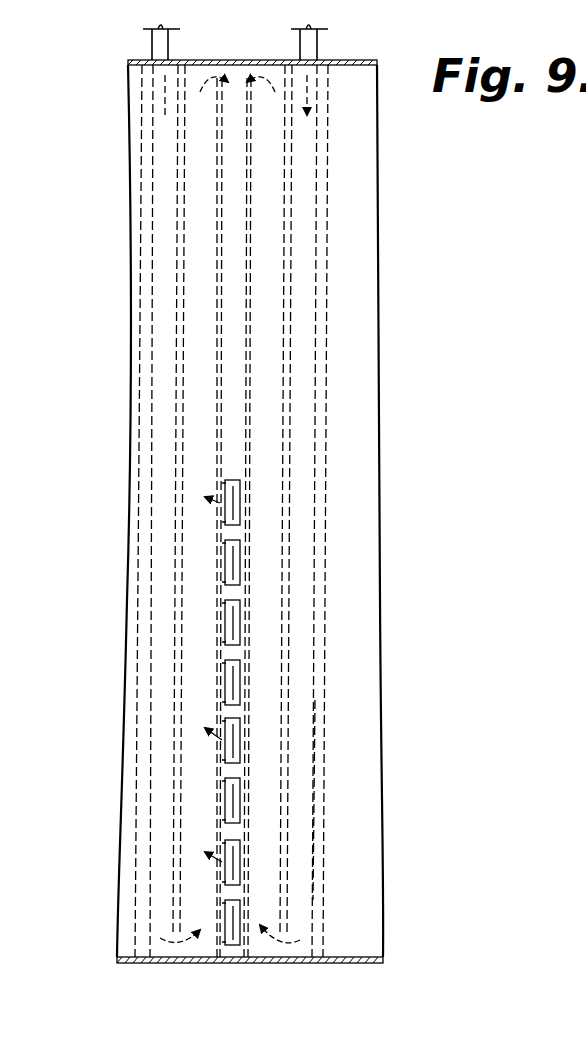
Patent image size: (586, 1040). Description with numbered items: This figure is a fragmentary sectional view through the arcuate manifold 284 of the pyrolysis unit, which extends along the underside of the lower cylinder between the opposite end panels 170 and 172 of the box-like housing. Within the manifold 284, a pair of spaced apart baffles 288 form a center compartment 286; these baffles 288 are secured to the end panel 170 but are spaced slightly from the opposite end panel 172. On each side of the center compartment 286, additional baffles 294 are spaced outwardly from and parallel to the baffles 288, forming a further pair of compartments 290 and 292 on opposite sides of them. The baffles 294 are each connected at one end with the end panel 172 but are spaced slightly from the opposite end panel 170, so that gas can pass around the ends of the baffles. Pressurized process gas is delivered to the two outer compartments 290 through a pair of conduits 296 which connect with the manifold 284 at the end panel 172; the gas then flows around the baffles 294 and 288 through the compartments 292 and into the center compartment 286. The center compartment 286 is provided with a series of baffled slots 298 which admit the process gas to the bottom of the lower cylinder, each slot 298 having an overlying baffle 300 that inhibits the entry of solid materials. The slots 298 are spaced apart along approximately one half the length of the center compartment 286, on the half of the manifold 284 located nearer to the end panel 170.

The end panel 170 is at (340, 957).
The end panel 172 is at (262, 57).
The arcuate manifold 284 is at (320, 793).
The center compartment 286 is at (237, 357).
The baffles 288 is at (248, 283).
The outer compartments 290 is at (140, 568).
The compartments 292 is at (195, 606).
The baffles 294 is at (178, 413).
The conduits 296 is at (152, 40).
The baffled slots 298 is at (228, 522).
The baffle 300 is at (228, 482).